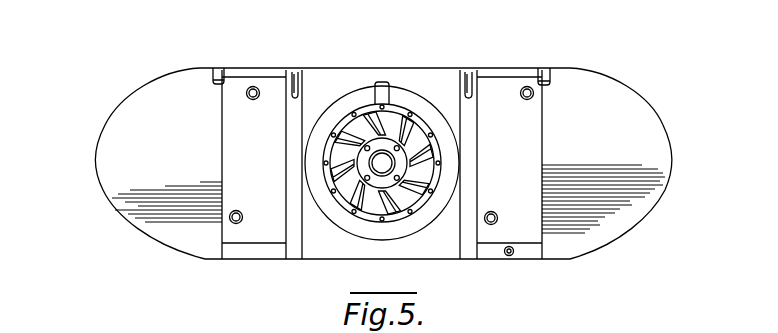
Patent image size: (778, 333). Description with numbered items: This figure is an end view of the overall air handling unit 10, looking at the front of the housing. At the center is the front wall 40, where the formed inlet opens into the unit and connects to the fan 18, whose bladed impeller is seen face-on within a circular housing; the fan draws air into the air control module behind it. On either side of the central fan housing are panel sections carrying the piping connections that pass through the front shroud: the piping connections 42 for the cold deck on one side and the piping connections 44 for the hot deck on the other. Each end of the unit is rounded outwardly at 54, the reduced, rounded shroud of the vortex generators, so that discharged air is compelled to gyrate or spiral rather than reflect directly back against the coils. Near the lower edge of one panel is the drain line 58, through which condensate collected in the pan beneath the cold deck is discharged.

The unit 10 is at (463, 60).
The fan 18 is at (391, 140).
The front wall 40 is at (363, 45).
The piping connections for the cold deck 42 is at (527, 86).
The piping connections for the hot deck 44 is at (253, 86).
The rounded outer shroud of vortex generator 54 is at (157, 87).
The drain line 58 is at (508, 256).